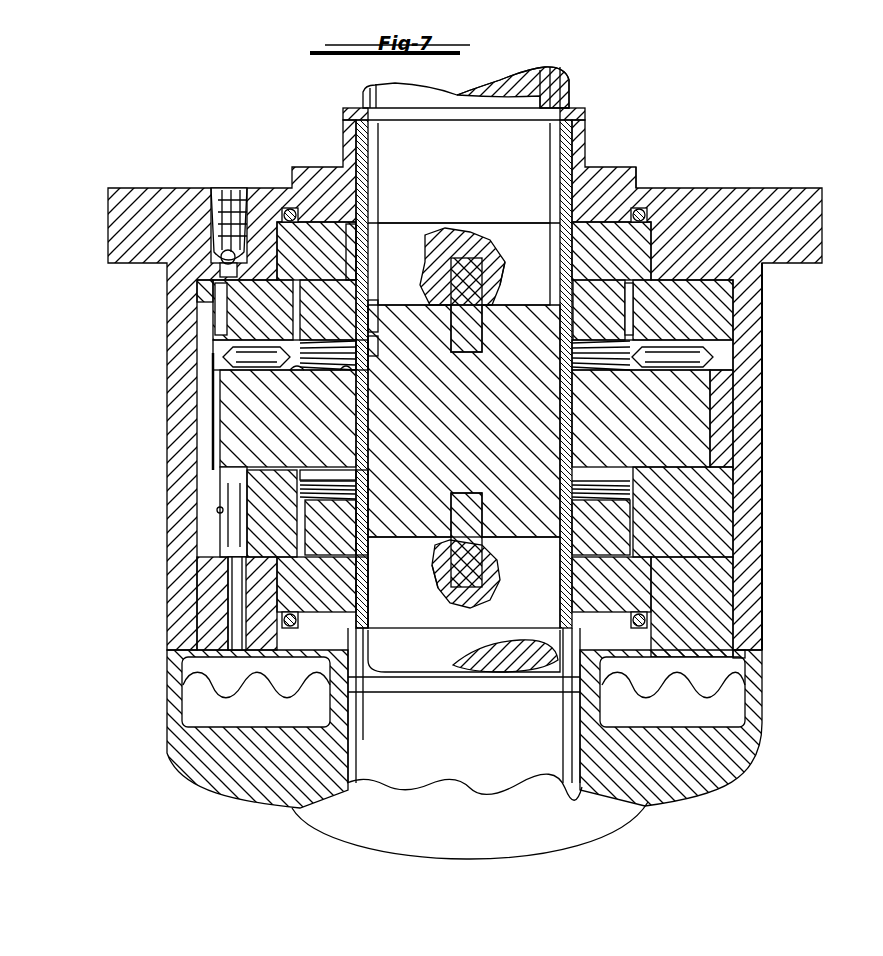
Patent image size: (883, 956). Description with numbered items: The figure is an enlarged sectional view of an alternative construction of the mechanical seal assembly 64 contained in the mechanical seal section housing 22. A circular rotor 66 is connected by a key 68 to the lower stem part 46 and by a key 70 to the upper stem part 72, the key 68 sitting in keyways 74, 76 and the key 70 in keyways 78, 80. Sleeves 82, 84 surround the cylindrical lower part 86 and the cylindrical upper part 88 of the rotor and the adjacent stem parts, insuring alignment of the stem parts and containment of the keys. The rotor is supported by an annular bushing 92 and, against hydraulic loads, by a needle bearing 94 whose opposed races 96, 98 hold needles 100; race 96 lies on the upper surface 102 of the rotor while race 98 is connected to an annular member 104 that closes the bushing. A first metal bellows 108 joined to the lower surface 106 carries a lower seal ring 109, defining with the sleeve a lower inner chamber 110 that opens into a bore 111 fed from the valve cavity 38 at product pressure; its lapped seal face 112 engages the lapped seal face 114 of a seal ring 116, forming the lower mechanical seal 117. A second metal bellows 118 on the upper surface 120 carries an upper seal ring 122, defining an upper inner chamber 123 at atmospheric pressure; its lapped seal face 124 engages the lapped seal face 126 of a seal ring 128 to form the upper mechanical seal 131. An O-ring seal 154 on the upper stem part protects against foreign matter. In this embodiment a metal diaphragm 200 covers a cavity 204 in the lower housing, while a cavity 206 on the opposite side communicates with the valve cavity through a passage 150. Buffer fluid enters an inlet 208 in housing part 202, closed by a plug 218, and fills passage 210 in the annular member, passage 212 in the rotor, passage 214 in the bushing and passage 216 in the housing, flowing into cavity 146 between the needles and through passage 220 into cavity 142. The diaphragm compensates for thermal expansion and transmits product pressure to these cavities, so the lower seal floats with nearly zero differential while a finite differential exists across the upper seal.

The mechanical seal section housing 22 is at (748, 393).
The valve cavity 38 is at (472, 770).
The lower stem part 46 is at (428, 658).
The seal assembly 64 is at (774, 466).
The circular rotor 66 is at (500, 448).
The key 68 is at (495, 588).
The key 70 is at (488, 250).
The upper stem part 72 is at (557, 134).
The keyway 74 is at (485, 543).
The keyway 76 is at (444, 580).
The keyway 78 is at (484, 340).
The keyway 80 is at (500, 300).
The sleeve 82 is at (372, 500).
The sleeve 84 is at (372, 366).
The cylindrical lower part of the rotor 86 is at (464, 582).
The cylindrical upper part of the rotor 88 is at (386, 303).
The annular bushing 92 is at (735, 528).
The needle bearing 94 is at (205, 348).
The race 96 is at (252, 368).
The race 98 is at (275, 322).
The needles 100 is at (240, 357).
The upper surface of the rotor 102 is at (298, 372).
The annular member 104 is at (290, 277).
The lower surface of the rotor 106 is at (338, 478).
The first metal bellows 108 is at (358, 478).
The lower seal ring 109 is at (273, 513).
The lower inner zone or chamber 110 is at (330, 510).
The bore 111 is at (578, 734).
The lapped seal face 112 is at (325, 598).
The lapped seal face 114 is at (356, 580).
The seal ring 116 is at (215, 576).
The inner or lower mechanical seal 117 is at (672, 581).
The second metal bellows 118 is at (465, 418).
The upper surface of the rotor 120 is at (348, 375).
The upper seal ring 122 is at (372, 345).
The upper inner zone or chamber 123 is at (372, 313).
The lapped seal face 124 is at (341, 276).
The lapped seal face 126 is at (326, 290).
The seal ring 128 is at (650, 252).
The outer or upper mechanical seal 131 is at (660, 325).
The cavity 142 is at (650, 527).
The cavity 146 is at (635, 300).
The passage 150 is at (362, 735).
The O-ring seal 154 is at (580, 106).
The metal diaphragm 200 is at (745, 713).
The housing part 202 is at (665, 190).
The cavity 204 is at (735, 663).
The cavity 206 is at (205, 713).
The inlet 208 is at (213, 196).
The passage 210 is at (205, 290).
The passage 212 is at (213, 410).
The passage 214 is at (216, 511).
The passage 216 is at (235, 620).
The plug 218 is at (238, 190).
The passage 220 is at (265, 468).